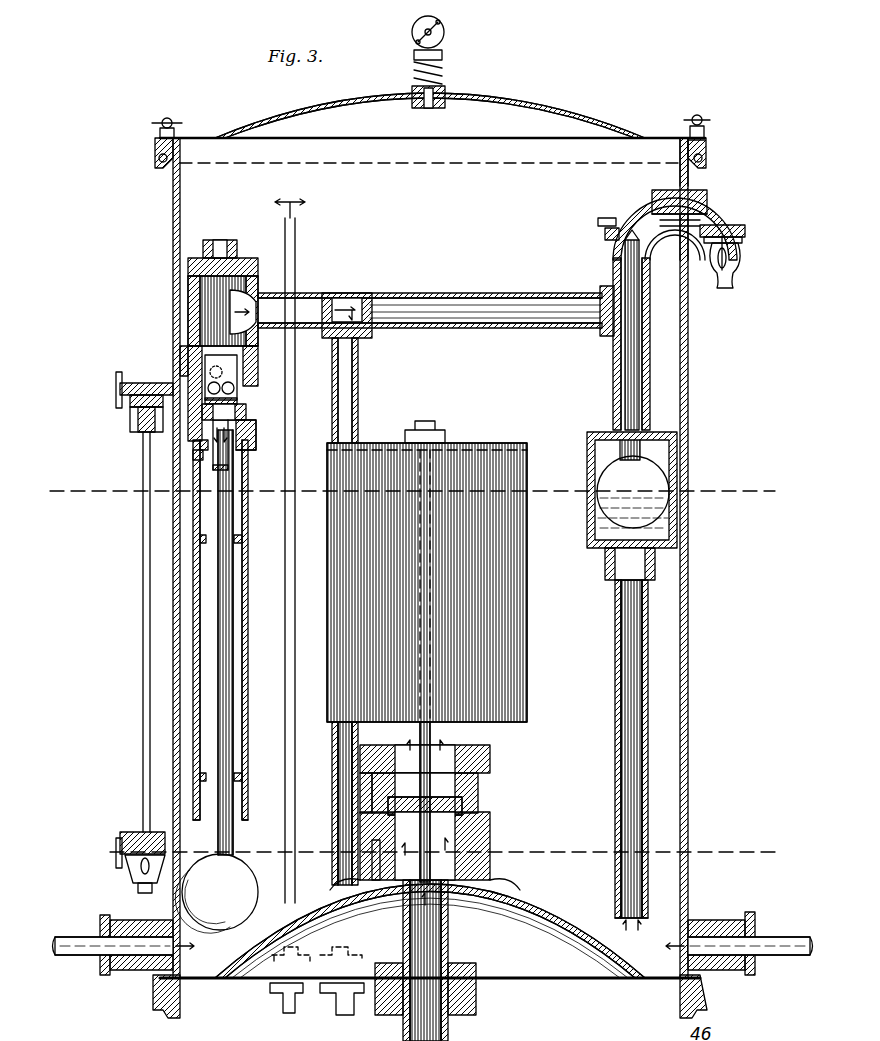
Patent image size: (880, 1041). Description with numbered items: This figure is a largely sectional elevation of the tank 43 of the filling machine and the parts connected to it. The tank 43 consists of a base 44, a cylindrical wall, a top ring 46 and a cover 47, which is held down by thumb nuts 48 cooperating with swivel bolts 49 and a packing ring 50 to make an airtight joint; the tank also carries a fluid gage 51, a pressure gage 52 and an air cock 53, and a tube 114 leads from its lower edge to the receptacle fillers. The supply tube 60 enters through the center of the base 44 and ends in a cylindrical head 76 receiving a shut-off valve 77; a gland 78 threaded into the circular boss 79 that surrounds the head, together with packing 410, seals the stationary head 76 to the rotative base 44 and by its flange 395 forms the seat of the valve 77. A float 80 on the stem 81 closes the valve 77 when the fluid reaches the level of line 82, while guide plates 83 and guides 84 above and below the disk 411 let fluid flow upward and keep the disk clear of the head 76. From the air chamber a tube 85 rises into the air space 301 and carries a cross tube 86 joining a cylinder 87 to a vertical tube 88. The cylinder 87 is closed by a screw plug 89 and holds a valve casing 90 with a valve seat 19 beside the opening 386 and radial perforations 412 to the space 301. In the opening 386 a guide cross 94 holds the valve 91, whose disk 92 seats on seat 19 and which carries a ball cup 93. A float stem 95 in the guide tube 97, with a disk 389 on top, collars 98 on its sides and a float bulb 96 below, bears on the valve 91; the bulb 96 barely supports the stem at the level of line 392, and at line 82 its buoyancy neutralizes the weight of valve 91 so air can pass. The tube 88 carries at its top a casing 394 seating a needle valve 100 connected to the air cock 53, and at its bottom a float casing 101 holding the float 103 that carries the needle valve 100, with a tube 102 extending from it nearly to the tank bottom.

The valve seat 19 is at (246, 408).
The tank 43 is at (688, 640).
The base 44 is at (520, 905).
The top ring 46 is at (706, 150).
The cover 47 is at (580, 113).
The thumb nuts 48 is at (700, 114).
The swivel bolts 49 is at (160, 130).
The packing ring 50 is at (705, 140).
The fluid gage 51 is at (143, 597).
The pressure gage 52 is at (440, 40).
The air cock 53 is at (735, 264).
The tube 60 is at (430, 1010).
The cylindrical head 76 is at (490, 835).
The shut-off valve 77 is at (462, 800).
The gland 78 is at (490, 768).
The circular boss 79 is at (465, 852).
The float 80 is at (527, 676).
The stem 81 is at (412, 735).
The line 82 is at (412, 483).
The guide plates 83 is at (430, 770).
The guide plates 84 is at (380, 935).
The tube 85 is at (358, 408).
The cross tube 86 is at (440, 293).
The cylinder 87 is at (200, 312).
The vertical tube 88 is at (650, 318).
The screw plug 89 is at (220, 240).
The valve casing 90 is at (188, 368).
The valve 91 is at (237, 398).
The disk 92 is at (133, 420).
The ball cup 93 is at (230, 368).
The guide cross 94 is at (228, 430).
The float stem 95 is at (225, 615).
The float bulb 96 is at (240, 882).
The guide tube 97 is at (248, 518).
The collars 98 is at (242, 539).
The needle valve 100 is at (612, 258).
The float casing 101 is at (677, 520).
The tube 102 is at (648, 690).
The float 103 is at (645, 478).
The tube 114 is at (72, 958).
The air space 301 is at (432, 413).
The cylindrical vertical opening 386 is at (200, 445).
The disk 389 is at (193, 455).
The horizontal line 392 is at (442, 844).
The casing 394 is at (598, 240).
The flange 395 is at (470, 745).
The packing 410 is at (490, 872).
The disk 411 is at (372, 790).
The radial perforations 412 is at (256, 445).